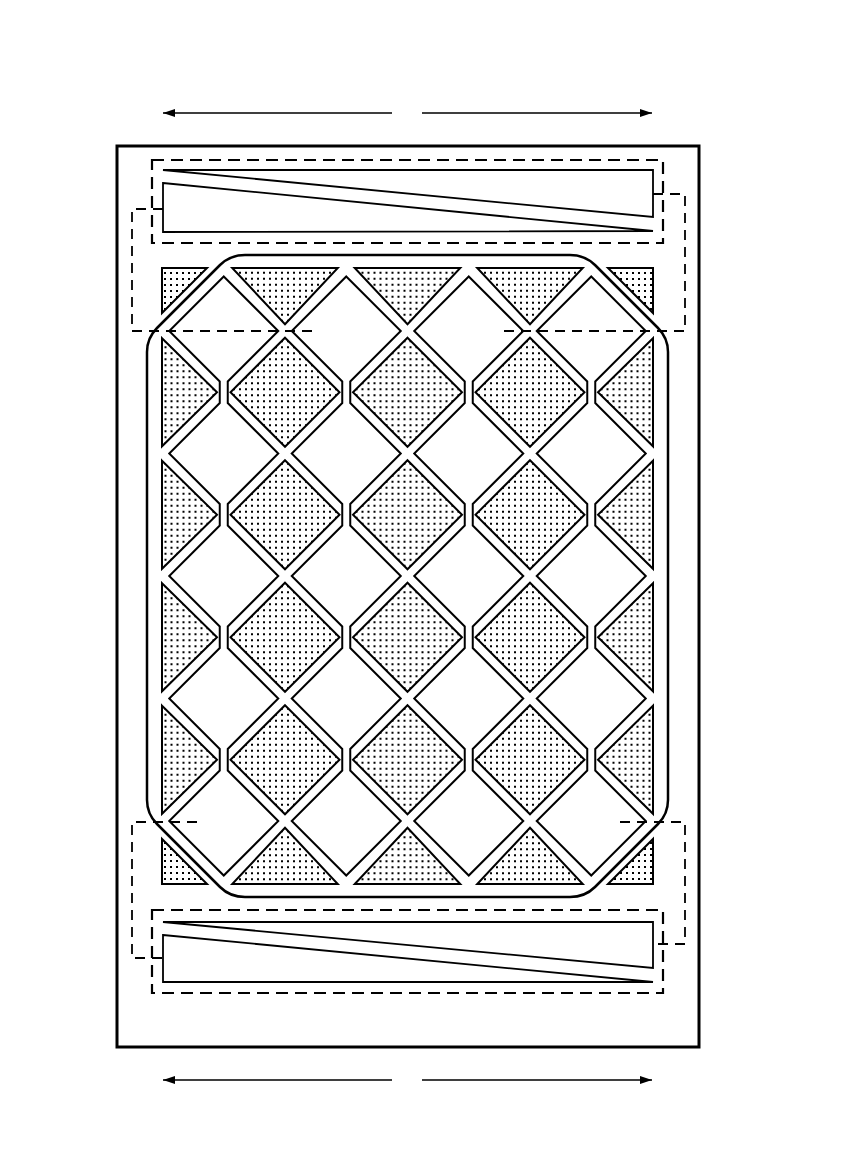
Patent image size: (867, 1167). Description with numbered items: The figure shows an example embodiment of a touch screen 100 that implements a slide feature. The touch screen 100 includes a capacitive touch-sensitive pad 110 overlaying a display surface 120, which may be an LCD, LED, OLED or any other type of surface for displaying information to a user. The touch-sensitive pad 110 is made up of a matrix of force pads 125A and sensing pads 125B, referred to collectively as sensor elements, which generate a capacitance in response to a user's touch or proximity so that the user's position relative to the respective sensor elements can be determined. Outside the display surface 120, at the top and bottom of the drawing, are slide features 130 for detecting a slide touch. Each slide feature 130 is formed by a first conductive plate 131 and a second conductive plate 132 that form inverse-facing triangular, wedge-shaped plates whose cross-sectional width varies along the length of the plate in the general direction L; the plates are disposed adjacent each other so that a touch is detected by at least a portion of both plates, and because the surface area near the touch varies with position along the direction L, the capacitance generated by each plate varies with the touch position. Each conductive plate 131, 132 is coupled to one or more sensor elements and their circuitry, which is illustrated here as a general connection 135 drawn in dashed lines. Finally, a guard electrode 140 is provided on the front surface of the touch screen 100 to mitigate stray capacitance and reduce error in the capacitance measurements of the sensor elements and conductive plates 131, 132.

The touch screen 100 is at (680, 64).
The capacitive touch-sensitive pad 110 is at (640, 394).
The display surface 120 is at (153, 510).
The force pads 125A is at (648, 508).
The sensing pads 125B is at (622, 569).
The slide feature 130 is at (152, 182).
The first conductive plate 131 is at (647, 205).
The second conductive plate 132 is at (212, 222).
The general connection 135 is at (132, 287).
The guard electrode 140 is at (688, 665).